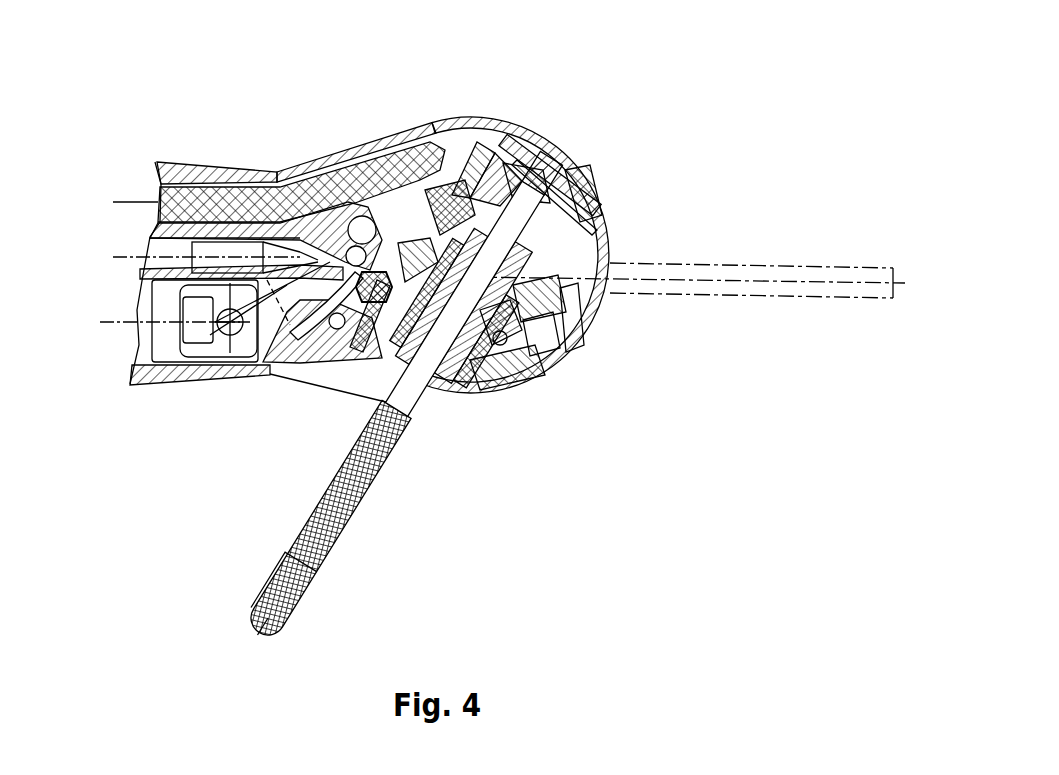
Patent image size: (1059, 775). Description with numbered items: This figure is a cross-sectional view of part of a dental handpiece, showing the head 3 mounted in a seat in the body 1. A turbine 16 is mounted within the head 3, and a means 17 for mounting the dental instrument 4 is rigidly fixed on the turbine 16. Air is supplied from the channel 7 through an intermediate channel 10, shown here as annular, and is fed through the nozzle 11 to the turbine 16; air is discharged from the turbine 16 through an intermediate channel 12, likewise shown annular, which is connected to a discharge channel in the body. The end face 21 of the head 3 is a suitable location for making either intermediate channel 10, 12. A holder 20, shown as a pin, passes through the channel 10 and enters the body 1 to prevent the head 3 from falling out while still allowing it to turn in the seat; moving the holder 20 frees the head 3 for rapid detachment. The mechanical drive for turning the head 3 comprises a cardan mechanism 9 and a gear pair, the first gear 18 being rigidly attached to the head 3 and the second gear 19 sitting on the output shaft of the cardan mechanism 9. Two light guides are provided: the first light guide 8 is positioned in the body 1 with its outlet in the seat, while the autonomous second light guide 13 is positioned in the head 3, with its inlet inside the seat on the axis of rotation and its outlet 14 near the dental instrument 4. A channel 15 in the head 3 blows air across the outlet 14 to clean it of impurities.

The body 1 is at (157, 163).
The first light guide 8 is at (232, 188).
The intermediate channel for discharging air 12 is at (343, 196).
The nozzle 11 is at (384, 150).
The end face of the head 21 is at (465, 143).
The second light guide 13 is at (515, 150).
The holder 20 is at (540, 147).
The first gear 18 is at (597, 193).
The head 3 is at (610, 247).
The turbine 16 is at (560, 315).
The channel 15 is at (540, 377).
The outlet 14 is at (497, 388).
The means for mounting the dental instrument 17 is at (462, 390).
The dental instrument 4 is at (387, 450).
The intermediate channel 10 is at (329, 330).
The second gear 19 is at (272, 370).
The channel 7 is at (146, 378).
The cardan mechanism 9 is at (167, 343).